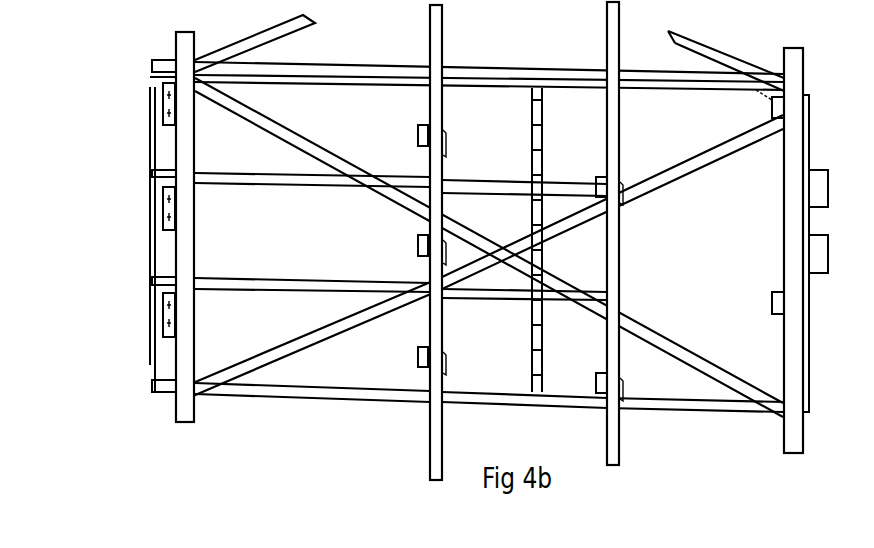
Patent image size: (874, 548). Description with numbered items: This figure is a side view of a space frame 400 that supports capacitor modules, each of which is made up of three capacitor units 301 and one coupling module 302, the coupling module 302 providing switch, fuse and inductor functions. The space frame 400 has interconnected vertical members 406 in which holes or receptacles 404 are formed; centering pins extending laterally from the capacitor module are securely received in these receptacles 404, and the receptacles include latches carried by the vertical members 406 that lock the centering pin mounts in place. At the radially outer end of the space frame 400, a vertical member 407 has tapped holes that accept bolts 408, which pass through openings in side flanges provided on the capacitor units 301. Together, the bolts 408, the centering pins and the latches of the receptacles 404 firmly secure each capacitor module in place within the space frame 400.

The capacitor unit 301 is at (250, 333).
The coupling module 302 is at (692, 267).
The space frame 400 is at (103, 43).
The receptacle 404 is at (418, 128).
The vertical member 406 is at (442, 28).
The vertical member 407 is at (185, 211).
The bolt 408 is at (163, 117).